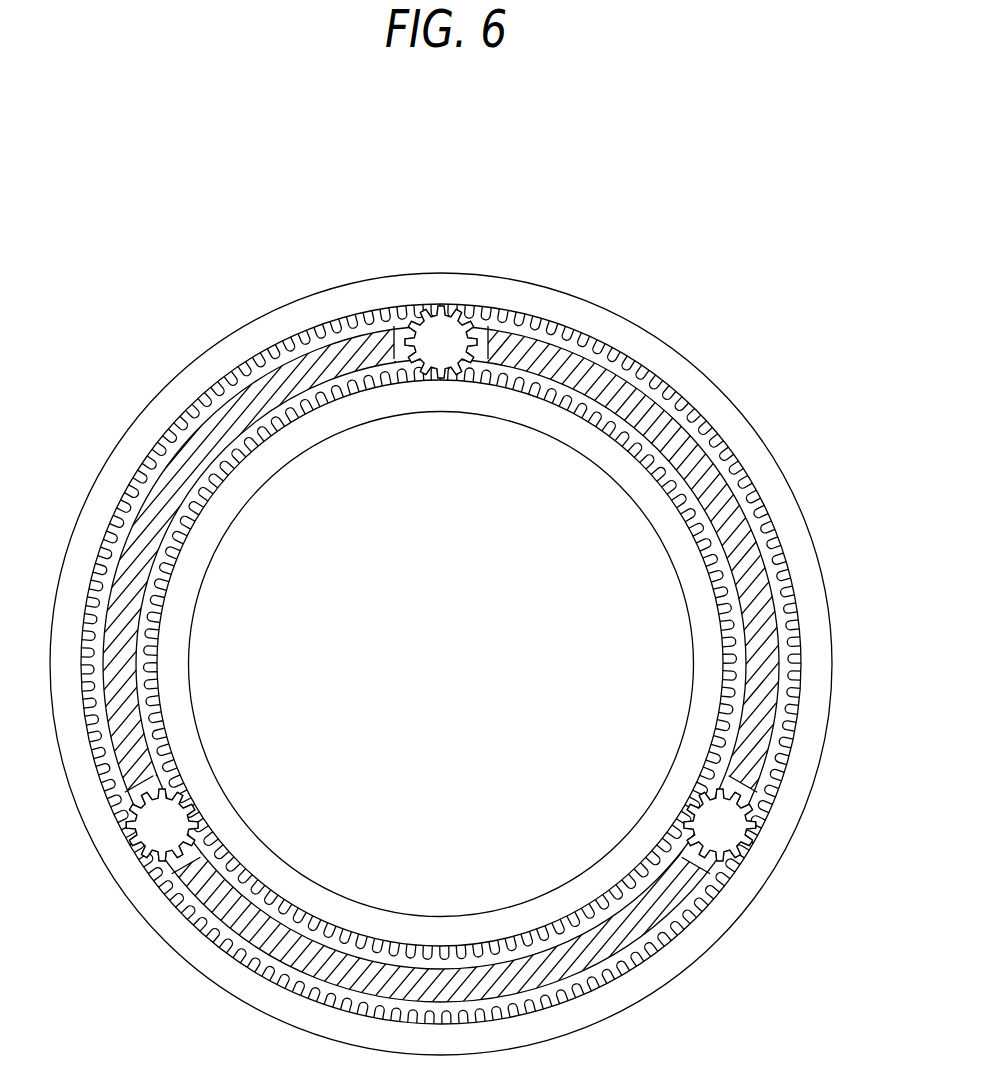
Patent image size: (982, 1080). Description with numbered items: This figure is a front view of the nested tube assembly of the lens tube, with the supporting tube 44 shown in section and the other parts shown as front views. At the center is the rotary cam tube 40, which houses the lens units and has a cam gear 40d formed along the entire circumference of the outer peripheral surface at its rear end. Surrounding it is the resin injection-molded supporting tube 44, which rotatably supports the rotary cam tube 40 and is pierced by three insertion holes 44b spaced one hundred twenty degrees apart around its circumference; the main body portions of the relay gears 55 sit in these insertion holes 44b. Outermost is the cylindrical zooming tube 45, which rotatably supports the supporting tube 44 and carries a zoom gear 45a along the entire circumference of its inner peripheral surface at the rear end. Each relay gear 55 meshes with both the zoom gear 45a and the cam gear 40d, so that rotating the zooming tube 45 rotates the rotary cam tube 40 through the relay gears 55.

The rotary cam tube 40 is at (334, 422).
The cam gear 40d is at (462, 380).
The supporting tube 44 is at (652, 418).
The insertion holes 44b is at (382, 306).
The zooming tube 45 is at (458, 285).
The zoom gear 45a is at (431, 305).
The relay gears 55 is at (474, 308).